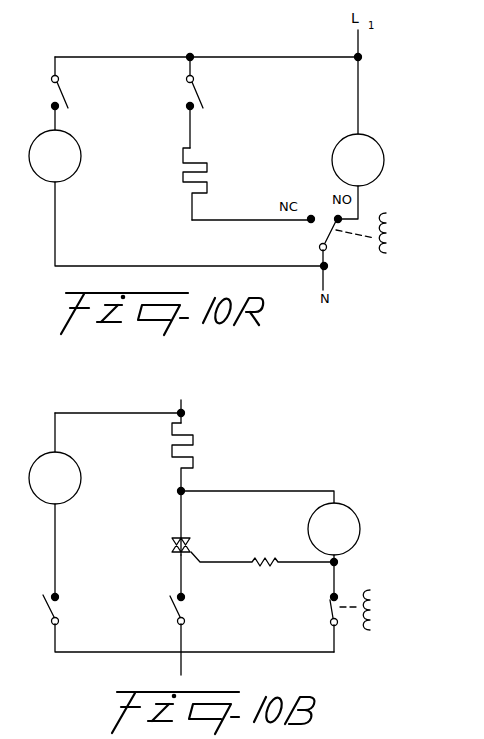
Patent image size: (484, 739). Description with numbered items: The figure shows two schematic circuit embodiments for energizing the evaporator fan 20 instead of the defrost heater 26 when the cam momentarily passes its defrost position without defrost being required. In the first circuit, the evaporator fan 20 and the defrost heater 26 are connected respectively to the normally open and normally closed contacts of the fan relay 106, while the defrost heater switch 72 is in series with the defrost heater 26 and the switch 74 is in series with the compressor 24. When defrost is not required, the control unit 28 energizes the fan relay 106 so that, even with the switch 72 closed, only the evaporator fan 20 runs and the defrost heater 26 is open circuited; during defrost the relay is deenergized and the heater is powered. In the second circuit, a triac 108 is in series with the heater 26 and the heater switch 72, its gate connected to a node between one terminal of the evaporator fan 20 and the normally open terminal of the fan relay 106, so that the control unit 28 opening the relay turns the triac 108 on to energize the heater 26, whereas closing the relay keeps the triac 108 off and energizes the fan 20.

In FIG. 10A, the evaporator fan 20 is at (359, 146).
In FIG. 10B, the evaporator fan 20 is at (339, 512).
In FIG. 10A, the compressor 24 is at (68, 175).
In FIG. 10B, the compressor 24 is at (62, 468).
In FIG. 10A, the defrost heater 26 is at (209, 165).
In FIG. 10B, the defrost heater 26 is at (193, 442).
In FIG. 10A, the control unit 28 is at (409, 234).
In FIG. 10B, the control unit 28 is at (406, 612).
In FIG. 10A, the defrost heater switch 72 is at (205, 97).
In FIG. 10B, the defrost heater switch 72 is at (168, 608).
In FIG. 10A, the switch 74 is at (70, 97).
In FIG. 10A, the fan relay 106 is at (349, 253).
In FIG. 10B, the fan relay 106 is at (345, 627).
In FIG. 10B, the triac 108 is at (170, 543).